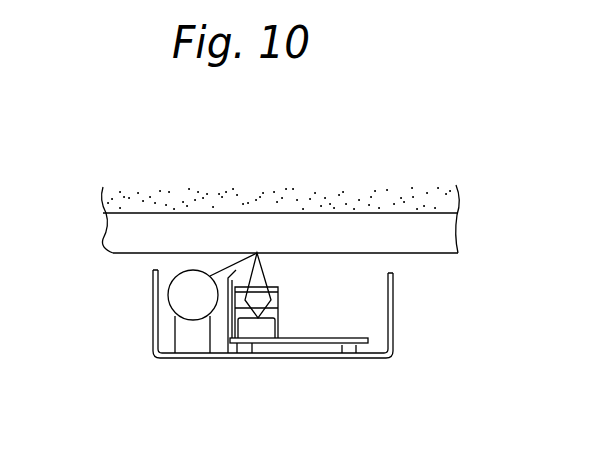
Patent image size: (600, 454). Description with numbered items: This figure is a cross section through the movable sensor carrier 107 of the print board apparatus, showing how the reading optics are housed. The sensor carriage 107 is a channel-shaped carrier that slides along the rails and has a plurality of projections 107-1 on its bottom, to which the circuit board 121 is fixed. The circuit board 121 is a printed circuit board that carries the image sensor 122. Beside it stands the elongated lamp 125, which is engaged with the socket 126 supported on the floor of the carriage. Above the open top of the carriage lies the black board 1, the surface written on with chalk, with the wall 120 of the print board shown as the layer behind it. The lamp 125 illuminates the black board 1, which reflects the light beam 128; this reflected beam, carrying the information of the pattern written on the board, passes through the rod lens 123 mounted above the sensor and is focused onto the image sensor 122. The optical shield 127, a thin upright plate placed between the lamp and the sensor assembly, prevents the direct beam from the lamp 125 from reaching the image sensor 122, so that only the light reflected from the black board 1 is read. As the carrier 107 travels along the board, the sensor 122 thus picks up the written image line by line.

The black board 1 is at (458, 242).
The wall 120 is at (394, 198).
The sensor carrier 107 is at (394, 312).
The projections 107-1 is at (247, 353).
The elongated lamp 125 is at (168, 302).
The socket 126 is at (183, 343).
The optical shield 127 is at (226, 335).
The circuit board 121 is at (332, 346).
The rod lens 123 is at (280, 297).
The image sensor 122 is at (266, 345).
The light beam 128 is at (264, 268).